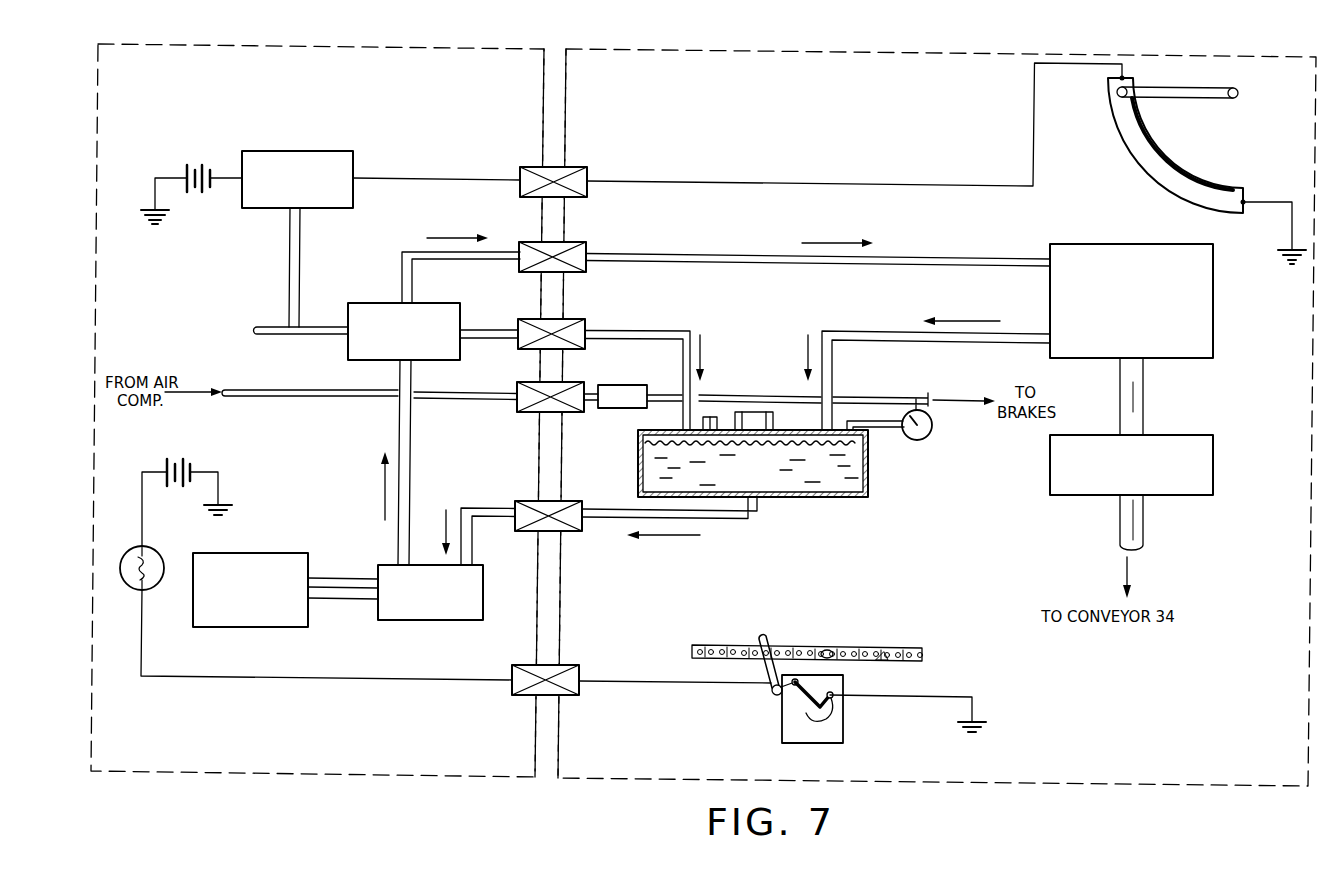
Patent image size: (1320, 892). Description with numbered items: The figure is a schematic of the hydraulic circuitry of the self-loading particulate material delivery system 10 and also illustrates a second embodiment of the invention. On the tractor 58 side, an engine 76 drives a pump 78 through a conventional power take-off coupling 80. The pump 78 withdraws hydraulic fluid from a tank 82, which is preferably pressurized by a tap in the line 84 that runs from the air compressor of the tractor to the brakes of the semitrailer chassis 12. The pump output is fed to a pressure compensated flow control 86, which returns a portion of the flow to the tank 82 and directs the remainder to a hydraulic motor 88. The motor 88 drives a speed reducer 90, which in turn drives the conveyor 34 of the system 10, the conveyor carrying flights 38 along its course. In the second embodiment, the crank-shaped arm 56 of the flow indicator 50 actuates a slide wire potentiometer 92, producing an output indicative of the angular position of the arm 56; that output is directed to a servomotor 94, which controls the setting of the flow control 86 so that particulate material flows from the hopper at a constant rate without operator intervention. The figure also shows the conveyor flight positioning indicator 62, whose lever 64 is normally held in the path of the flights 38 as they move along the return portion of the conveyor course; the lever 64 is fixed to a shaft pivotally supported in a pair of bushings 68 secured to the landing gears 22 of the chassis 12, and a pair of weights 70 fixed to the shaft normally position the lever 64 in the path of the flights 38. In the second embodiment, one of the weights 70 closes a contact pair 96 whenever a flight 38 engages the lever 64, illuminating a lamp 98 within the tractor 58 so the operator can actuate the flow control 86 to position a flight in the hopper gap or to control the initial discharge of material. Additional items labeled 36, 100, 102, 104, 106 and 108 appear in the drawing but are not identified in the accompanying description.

The self-loading particulate material delivery system 10 is at (703, 398).
The semitrailer chassis 12 is at (678, 57).
The landing gear 22 is at (837, 721).
The conveyor 34 is at (895, 640).
The conveyor chain link 36 is at (828, 644).
The flight 38 is at (878, 644).
The flow indicator 50 is at (1225, 132).
The crank-shaped arm 56 is at (1203, 90).
The tractor 58 is at (428, 56).
The conveyor flight positioning indicator 62 is at (831, 690).
The lever 64 is at (762, 657).
The bushing 68 is at (772, 696).
The weight 70 is at (810, 712).
The engine 76 is at (243, 560).
The pump 78 is at (421, 621).
The power take-off coupling 80 is at (360, 577).
The tank 82 is at (870, 466).
The line 84 is at (301, 388).
The pressure compensated flow control 86 is at (622, 390).
The hydraulic motor 88 is at (930, 436).
The speed reducer 90 is at (760, 413).
The slide wire potentiometer 92 is at (709, 418).
The servomotor 94 is at (381, 305).
The contact pair 96 is at (337, 334).
The lamp 98 is at (1080, 251).
The speed reducer 100 is at (1190, 443).
The discharge spout 102 is at (1131, 154).
The servo motor 104 is at (282, 153).
The switch contact 106 is at (835, 691).
The indicator lamp 108 is at (165, 540).